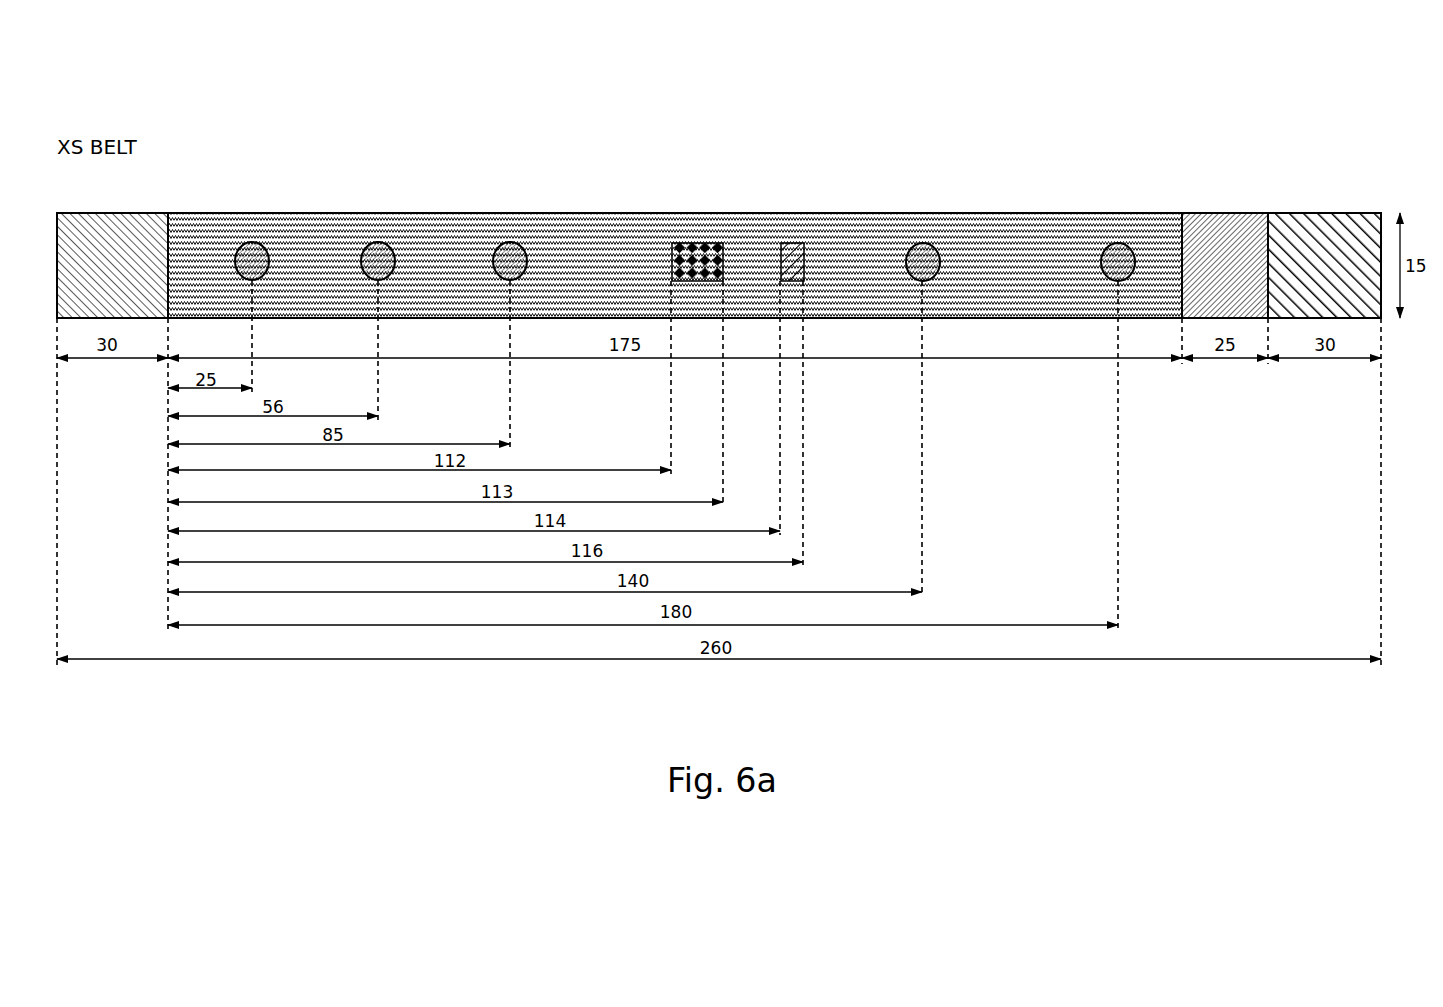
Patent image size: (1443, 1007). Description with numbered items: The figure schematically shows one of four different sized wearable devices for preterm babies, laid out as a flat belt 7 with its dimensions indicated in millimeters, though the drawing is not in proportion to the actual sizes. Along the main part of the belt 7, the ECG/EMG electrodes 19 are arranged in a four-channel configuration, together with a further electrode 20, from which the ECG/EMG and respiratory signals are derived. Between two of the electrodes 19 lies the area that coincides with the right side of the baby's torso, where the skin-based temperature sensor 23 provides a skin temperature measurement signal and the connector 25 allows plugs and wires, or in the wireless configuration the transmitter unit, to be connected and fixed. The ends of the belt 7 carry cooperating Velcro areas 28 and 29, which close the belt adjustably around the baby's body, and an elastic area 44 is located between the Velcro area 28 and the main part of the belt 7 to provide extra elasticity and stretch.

The belt 7 is at (607, 213).
The ECG/EMG electrodes 19 is at (266, 247).
The electrode 20 is at (387, 242).
The skin-based temperature sensor 23 is at (787, 243).
The connector 25 is at (697, 243).
The Velcro area 28 is at (1322, 240).
The Velcro area 29 is at (120, 228).
The elastic area 44 is at (1227, 227).